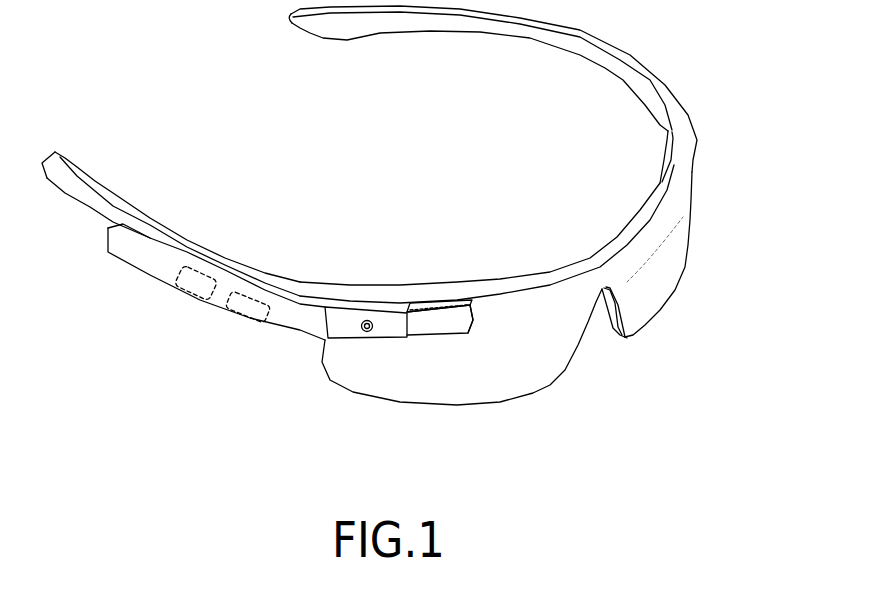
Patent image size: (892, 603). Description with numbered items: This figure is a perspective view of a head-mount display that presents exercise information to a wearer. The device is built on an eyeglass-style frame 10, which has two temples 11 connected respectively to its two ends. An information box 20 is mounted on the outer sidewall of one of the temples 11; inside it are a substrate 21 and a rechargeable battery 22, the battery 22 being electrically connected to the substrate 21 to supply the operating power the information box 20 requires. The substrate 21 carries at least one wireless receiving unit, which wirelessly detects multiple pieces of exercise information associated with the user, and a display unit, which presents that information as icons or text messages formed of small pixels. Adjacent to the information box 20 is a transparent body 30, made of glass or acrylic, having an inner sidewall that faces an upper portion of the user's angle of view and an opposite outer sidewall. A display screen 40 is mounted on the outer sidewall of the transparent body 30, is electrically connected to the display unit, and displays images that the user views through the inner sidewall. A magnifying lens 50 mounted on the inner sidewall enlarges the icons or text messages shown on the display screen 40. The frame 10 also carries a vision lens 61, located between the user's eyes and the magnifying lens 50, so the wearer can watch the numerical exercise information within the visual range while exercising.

The frame 10 is at (688, 150).
The temple 11 is at (88, 190).
The information box 20 is at (295, 331).
The substrate 21 is at (243, 312).
The rechargeable battery 22 is at (185, 297).
The transparent body 30 is at (460, 292).
The display screen 40 is at (438, 328).
The magnifying lens 50 is at (473, 307).
The vision lens 61 is at (527, 377).